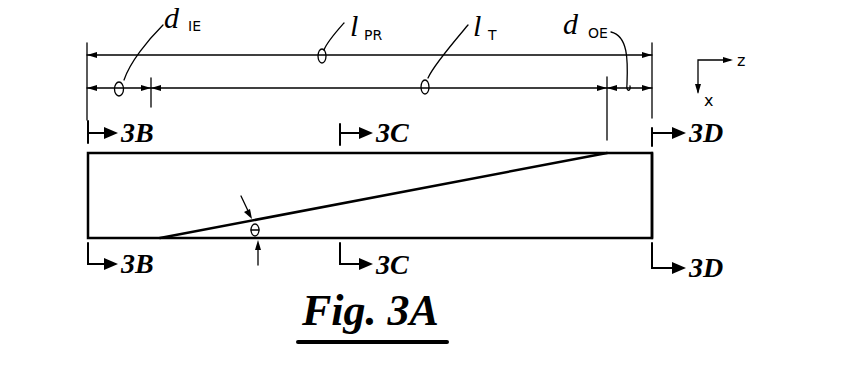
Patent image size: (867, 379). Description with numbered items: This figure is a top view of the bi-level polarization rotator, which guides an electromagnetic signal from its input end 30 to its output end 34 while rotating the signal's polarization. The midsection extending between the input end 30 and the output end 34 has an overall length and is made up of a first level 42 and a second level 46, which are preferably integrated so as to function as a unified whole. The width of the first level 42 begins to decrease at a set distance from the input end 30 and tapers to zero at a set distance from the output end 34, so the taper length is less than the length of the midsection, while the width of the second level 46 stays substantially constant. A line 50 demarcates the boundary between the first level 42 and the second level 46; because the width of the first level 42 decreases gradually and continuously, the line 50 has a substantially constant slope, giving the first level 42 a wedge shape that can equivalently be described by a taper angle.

The input end 30 is at (80, 195).
The output end 34 is at (662, 185).
The first level 42 is at (266, 172).
The second level 46 is at (501, 214).
The line 50 is at (514, 165).